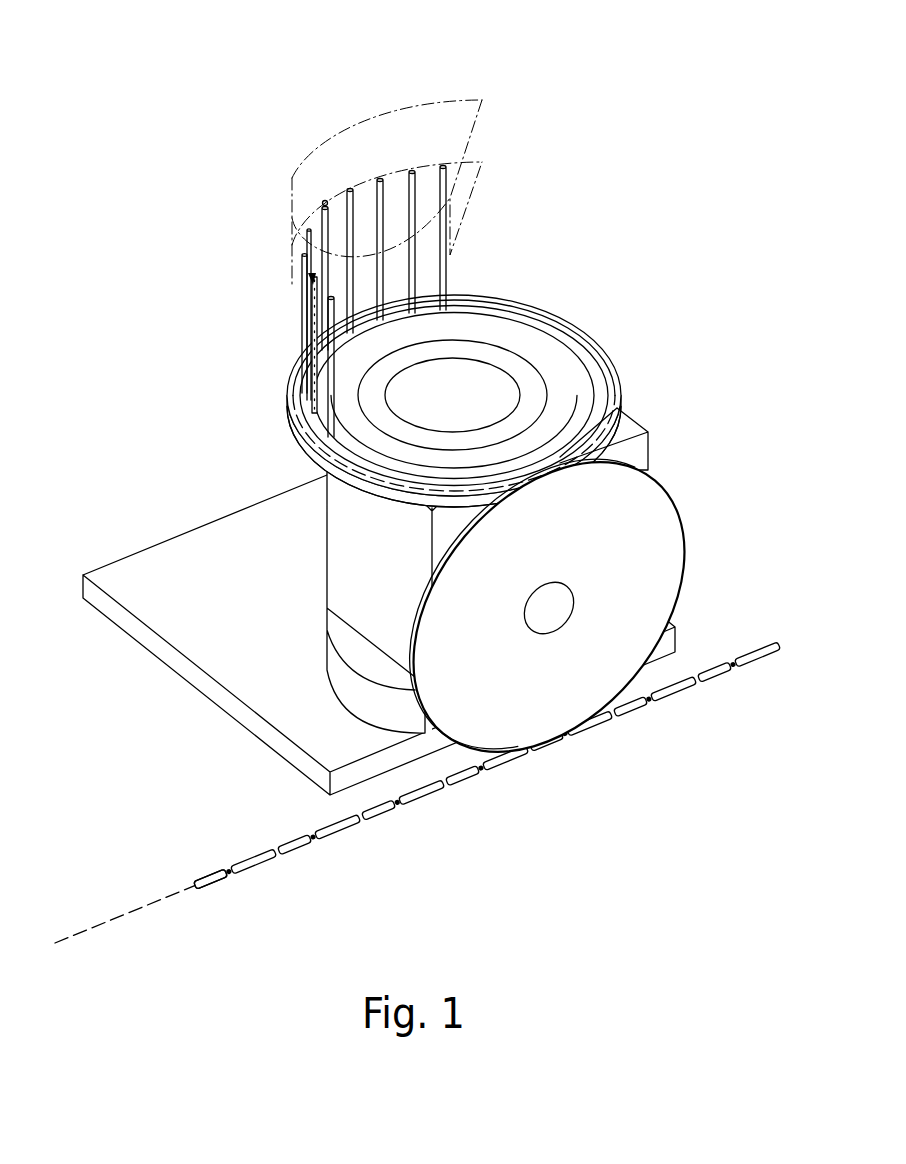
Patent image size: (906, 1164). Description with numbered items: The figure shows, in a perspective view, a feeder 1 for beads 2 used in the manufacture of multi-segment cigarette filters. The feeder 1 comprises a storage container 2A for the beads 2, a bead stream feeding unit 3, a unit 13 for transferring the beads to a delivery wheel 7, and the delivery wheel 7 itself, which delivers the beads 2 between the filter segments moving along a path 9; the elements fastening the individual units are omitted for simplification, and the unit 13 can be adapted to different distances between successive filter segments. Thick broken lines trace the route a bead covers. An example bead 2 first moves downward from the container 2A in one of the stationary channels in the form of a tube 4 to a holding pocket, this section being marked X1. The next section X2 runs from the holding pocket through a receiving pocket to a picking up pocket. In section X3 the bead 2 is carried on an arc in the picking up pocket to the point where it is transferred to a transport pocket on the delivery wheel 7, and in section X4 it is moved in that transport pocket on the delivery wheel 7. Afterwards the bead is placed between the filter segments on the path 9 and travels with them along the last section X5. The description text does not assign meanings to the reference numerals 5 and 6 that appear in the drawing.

The feeder 1 is at (583, 200).
The bead 2 is at (323, 203).
The storage container 2A is at (450, 112).
The bead stream feeding unit 3 is at (273, 255).
The tube 4 is at (377, 190).
The turntable platter 5 is at (292, 440).
The platter rim 6 is at (298, 397).
The delivery wheel 7 is at (623, 518).
The path 9 is at (185, 892).
The unit for transferring the beads 13 is at (252, 435).
The first section of the bead path X1 is at (307, 340).
The second section of the bead path X2 is at (285, 418).
The third section of the bead path X3 is at (382, 492).
The fourth section of the bead path X4 is at (687, 545).
The last section of the bead path X5 is at (220, 853).